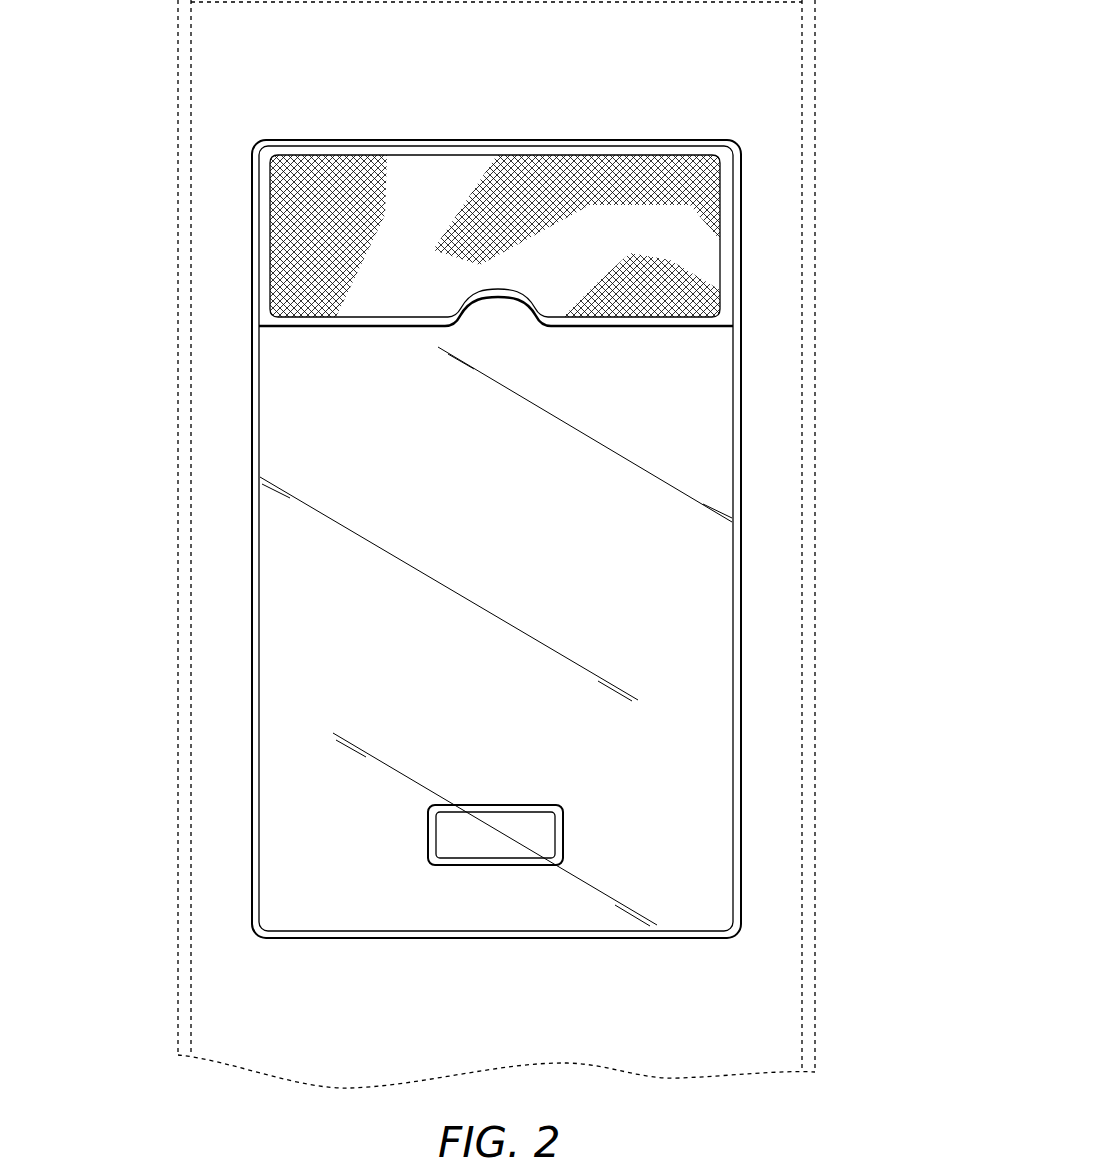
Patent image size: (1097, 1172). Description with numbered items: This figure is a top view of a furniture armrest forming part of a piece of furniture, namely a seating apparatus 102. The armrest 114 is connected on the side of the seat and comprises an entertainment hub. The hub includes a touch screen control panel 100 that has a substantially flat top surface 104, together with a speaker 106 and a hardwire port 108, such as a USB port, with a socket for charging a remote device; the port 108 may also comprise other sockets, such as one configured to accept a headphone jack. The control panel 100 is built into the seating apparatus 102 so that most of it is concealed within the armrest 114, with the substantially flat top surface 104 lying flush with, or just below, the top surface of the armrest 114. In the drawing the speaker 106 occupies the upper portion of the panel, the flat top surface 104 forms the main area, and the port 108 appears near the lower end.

The touch screen control panel 100 is at (772, 450).
The seating apparatus 102 is at (835, 50).
The substantially flat top surface 104 is at (282, 587).
The speaker 106 is at (305, 238).
The hardwire port 108 is at (515, 850).
The armrest 114 is at (770, 693).